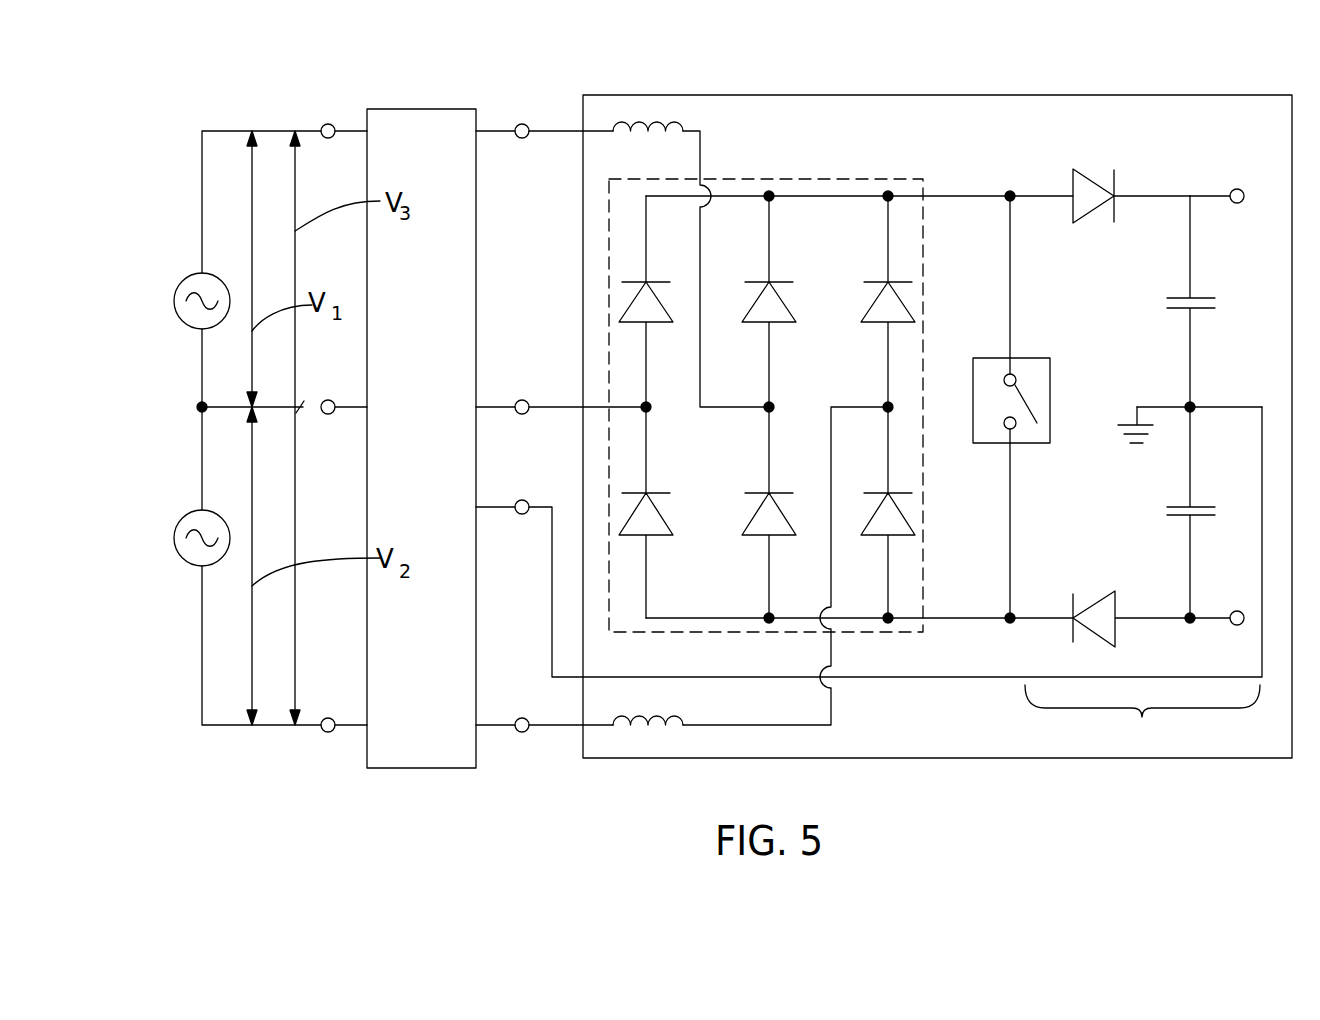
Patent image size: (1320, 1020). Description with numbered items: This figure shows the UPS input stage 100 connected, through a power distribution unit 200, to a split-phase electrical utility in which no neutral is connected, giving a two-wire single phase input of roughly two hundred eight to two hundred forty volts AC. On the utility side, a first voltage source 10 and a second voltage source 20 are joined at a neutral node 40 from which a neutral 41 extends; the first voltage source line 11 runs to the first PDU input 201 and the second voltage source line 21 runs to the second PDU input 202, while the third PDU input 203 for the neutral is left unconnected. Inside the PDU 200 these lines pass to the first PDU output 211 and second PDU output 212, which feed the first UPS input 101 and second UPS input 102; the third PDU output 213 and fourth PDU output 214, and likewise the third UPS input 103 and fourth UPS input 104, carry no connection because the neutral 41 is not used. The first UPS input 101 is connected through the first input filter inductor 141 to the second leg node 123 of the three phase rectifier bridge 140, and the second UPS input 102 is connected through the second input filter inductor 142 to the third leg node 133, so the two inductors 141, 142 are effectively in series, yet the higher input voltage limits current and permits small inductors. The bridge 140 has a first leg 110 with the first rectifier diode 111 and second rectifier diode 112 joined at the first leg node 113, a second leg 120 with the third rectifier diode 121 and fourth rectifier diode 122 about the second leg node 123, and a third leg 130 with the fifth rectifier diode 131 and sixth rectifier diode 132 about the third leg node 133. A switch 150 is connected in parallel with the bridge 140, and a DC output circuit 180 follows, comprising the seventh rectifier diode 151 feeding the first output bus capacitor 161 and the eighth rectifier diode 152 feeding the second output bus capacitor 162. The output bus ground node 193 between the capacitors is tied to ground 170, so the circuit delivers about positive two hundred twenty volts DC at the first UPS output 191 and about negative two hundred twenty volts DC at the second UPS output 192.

The first voltage source 10 is at (175, 290).
The second voltage source 20 is at (175, 528).
The first voltage source line 11 is at (232, 131).
The second voltage source line 21 is at (230, 733).
The neutral node 40 is at (198, 408).
The neutral 41 is at (215, 410).
The UPS input stage 100 is at (1047, 95).
The first UPS input 101 is at (564, 131).
The second UPS input 102 is at (545, 733).
The third UPS input 103 is at (570, 500).
The fourth UPS input 104 is at (568, 400).
The first leg 110 is at (646, 208).
The first rectifier diode 111 is at (660, 302).
The second rectifier diode 112 is at (665, 520).
The first leg node 113 is at (648, 410).
The second leg 120 is at (769, 222).
The third rectifier diode 121 is at (785, 302).
The fourth rectifier diode 122 is at (785, 512).
The second leg node 123 is at (775, 404).
The third leg 130 is at (898, 230).
The fifth rectifier diode 131 is at (907, 300).
The sixth rectifier diode 132 is at (906, 510).
The third leg node 133 is at (893, 405).
The three phase rectifier bridge 140 is at (837, 179).
The first input filter inductor 141 is at (655, 114).
The second input filter inductor 142 is at (655, 708).
The switch 150 is at (1032, 358).
The seventh rectifier diode 151 is at (1097, 180).
The eighth rectifier diode 152 is at (1100, 592).
The first output bus capacitor 161 is at (1175, 298).
The second output bus capacitor 162 is at (1175, 507).
The ground 170 is at (1128, 425).
The DC output circuit 180 is at (1142, 718).
The first UPS output 191 is at (1230, 190).
The second UPS output 192 is at (1235, 610).
The output bus ground node 193 is at (1195, 405).
The power distribution unit 200 is at (443, 109).
The first PDU input 201 is at (352, 131).
The second PDU input 202 is at (350, 725).
The third PDU input 203 is at (350, 407).
The first PDU output 211 is at (500, 131).
The second PDU output 212 is at (510, 733).
The third PDU output 213 is at (510, 500).
The fourth PDU output 214 is at (510, 400).